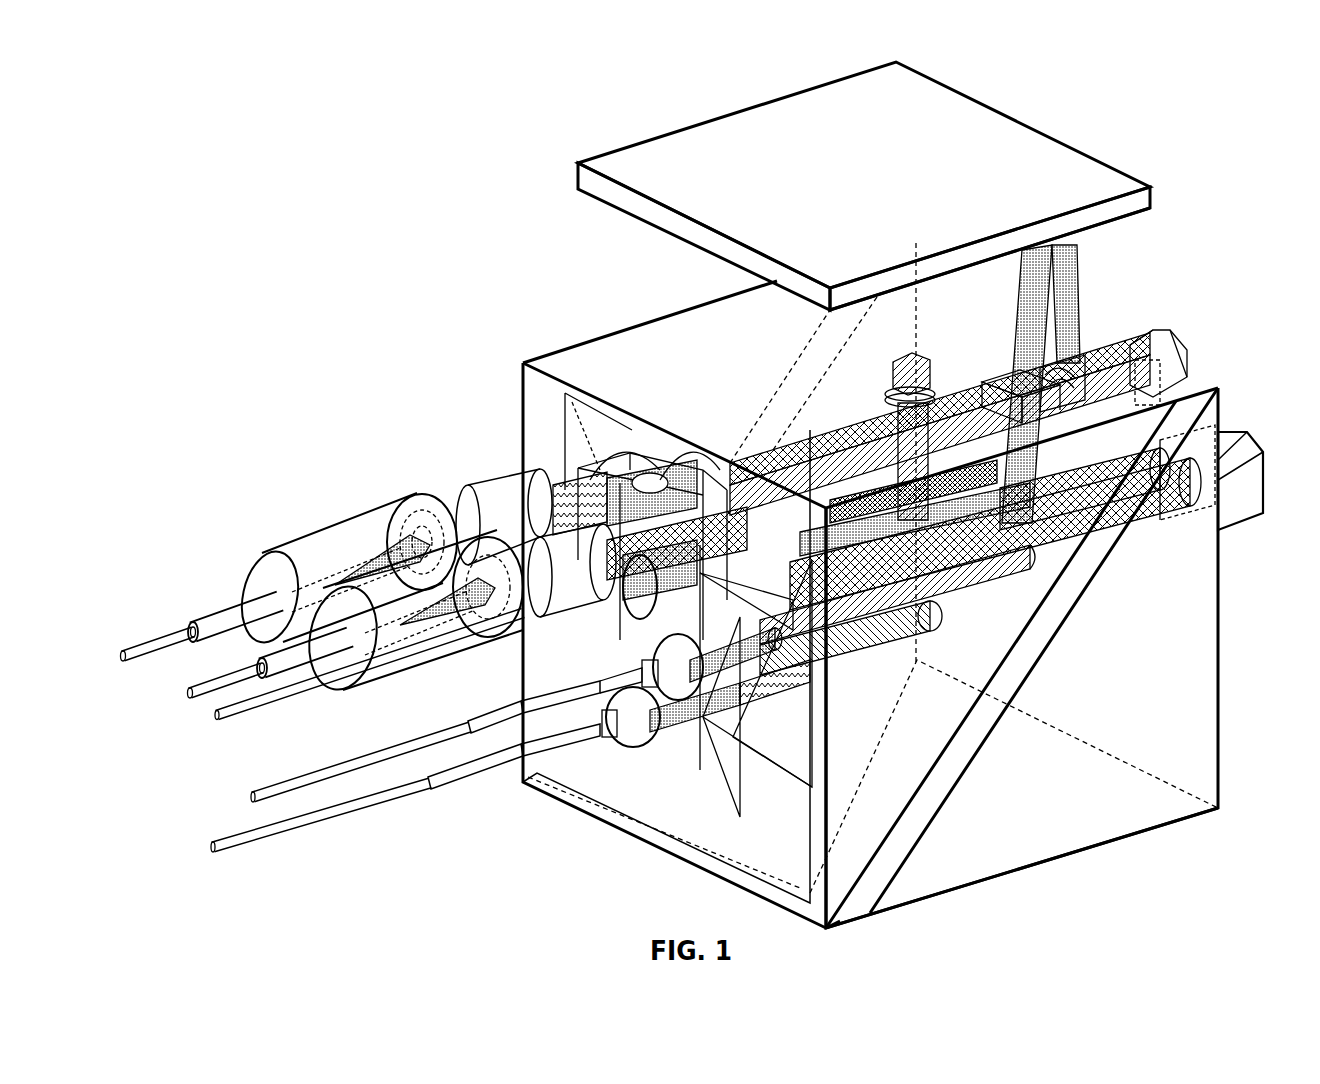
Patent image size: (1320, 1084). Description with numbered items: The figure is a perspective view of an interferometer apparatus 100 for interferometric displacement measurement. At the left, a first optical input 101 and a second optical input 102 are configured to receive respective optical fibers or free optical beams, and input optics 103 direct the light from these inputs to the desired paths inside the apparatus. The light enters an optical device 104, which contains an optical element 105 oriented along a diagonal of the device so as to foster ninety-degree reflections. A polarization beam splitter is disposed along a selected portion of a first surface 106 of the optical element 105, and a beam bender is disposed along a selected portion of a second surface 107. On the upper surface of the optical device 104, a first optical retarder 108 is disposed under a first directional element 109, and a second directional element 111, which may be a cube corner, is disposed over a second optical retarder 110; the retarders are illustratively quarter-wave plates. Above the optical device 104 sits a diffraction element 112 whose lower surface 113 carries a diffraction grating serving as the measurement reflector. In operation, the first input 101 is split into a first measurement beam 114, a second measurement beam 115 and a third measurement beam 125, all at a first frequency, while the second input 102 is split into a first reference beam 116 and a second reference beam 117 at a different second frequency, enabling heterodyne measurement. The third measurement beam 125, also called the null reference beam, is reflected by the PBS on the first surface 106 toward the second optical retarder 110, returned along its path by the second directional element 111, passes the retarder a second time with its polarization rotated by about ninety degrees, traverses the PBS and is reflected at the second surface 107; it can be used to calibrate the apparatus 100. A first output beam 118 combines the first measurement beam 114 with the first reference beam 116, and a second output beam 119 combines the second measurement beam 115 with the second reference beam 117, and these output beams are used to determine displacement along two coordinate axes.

The apparatus 100 is at (1207, 72).
The first optical input 101 is at (352, 520).
The second optical input 102 is at (382, 690).
The input optics 103 is at (600, 462).
The optical device 104 is at (1217, 790).
The optical element 105 is at (846, 930).
The first surface 106 is at (942, 760).
The second surface 107 is at (977, 760).
The first optical retarder 108 is at (1050, 425).
The first directional element 109 is at (1088, 410).
The second optical retarder 110 is at (936, 398).
The second directional element 111 is at (926, 365).
The diffraction element 112 is at (960, 100).
The lower surface 113 is at (1128, 222).
The first measurement beam 114 is at (1062, 565).
The second measurement beam 115 is at (1127, 345).
The first reference beam 116 is at (950, 575).
The second reference beam 117 is at (822, 445).
The first output beam 118 is at (600, 688).
The second output beam 119 is at (640, 668).
The third measurement beam 125 is at (908, 428).